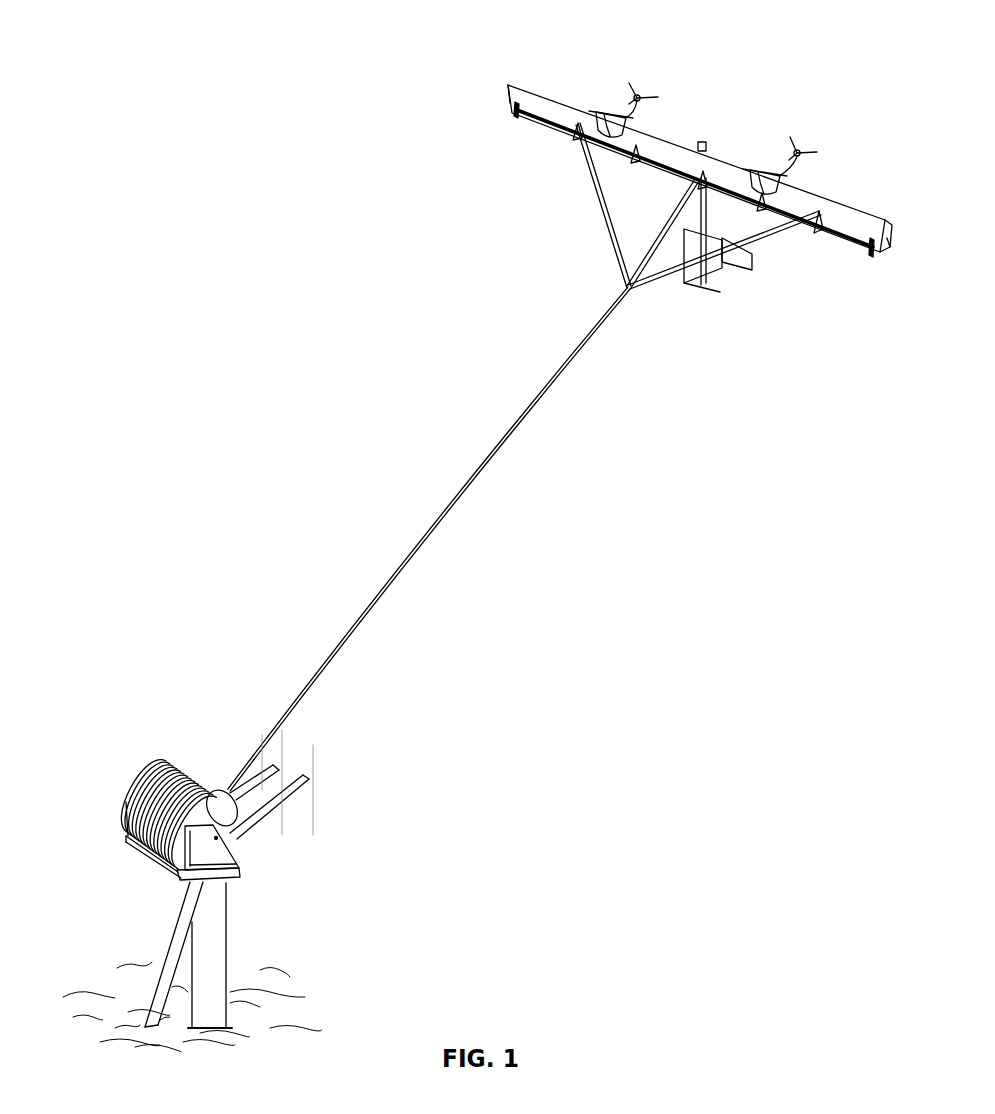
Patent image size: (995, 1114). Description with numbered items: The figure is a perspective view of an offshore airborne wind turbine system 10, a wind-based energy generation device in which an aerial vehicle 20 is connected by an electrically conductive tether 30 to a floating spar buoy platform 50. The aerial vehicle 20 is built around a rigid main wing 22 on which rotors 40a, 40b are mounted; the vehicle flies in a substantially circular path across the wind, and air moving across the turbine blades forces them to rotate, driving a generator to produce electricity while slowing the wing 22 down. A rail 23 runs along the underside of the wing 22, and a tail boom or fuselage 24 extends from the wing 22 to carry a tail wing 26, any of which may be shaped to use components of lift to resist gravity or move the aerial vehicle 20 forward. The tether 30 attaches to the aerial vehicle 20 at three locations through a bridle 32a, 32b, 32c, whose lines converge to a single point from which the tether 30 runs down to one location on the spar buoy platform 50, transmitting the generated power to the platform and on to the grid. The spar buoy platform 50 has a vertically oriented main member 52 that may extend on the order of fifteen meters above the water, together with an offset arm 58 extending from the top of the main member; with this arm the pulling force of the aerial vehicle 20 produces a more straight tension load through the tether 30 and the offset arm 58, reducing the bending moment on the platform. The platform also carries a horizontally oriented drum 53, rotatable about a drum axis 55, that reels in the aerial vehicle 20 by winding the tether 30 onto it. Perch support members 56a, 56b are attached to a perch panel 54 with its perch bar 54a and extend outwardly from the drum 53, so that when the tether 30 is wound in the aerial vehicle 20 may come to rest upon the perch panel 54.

The offshore airborne wind turbine system 10 is at (335, 152).
The aerial vehicle 20 is at (717, 68).
The main wing 22 is at (838, 213).
The rail 23 is at (538, 128).
The tail boom or fuselage 24 is at (700, 212).
The tail wing 26 is at (705, 278).
The electrically conductive tether 30 is at (502, 442).
The bridle 32a is at (600, 207).
The bridle 32b is at (645, 258).
The bridle 32c is at (770, 235).
The rotor 40a is at (604, 112).
The rotor 40b is at (638, 92).
The spar buoy platform 50 is at (82, 779).
The vertically oriented main member 52 is at (215, 945).
The drum 53 is at (215, 800).
The perch panel 54 is at (307, 760).
The perch bar 54a is at (247, 710).
The drum axis 55 is at (220, 827).
The perch support member 56a is at (257, 812).
The perch support member 56b is at (245, 780).
The offset arm 58 is at (175, 938).